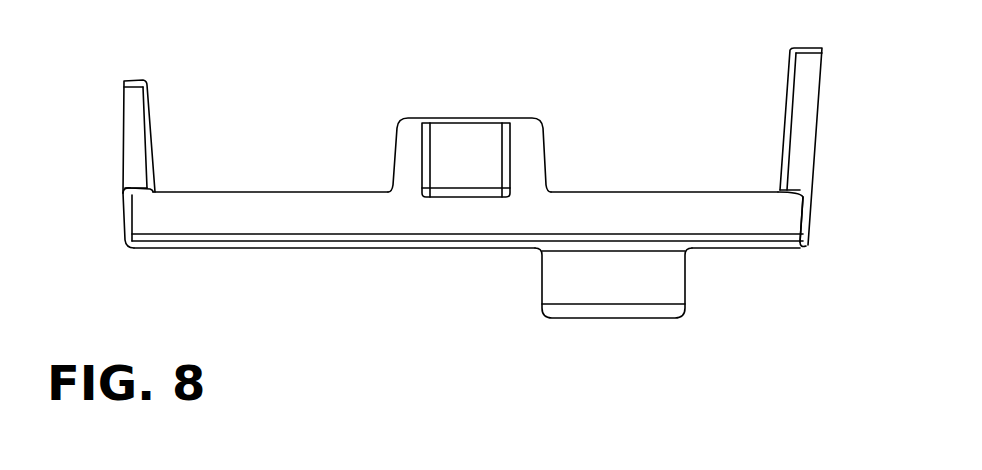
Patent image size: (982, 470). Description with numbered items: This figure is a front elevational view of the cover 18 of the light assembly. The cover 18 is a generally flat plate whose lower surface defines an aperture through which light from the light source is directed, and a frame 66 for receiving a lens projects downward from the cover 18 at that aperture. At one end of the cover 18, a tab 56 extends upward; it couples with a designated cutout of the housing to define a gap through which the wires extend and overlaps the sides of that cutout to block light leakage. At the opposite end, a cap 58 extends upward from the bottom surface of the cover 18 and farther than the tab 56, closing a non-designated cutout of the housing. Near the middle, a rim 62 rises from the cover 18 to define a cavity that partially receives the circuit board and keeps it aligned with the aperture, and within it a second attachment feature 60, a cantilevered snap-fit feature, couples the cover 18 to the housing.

The cover 18 is at (310, 110).
The tab 56 is at (118, 152).
The cap 58 is at (818, 132).
The second attachment feature 60 is at (453, 193).
The rim 62 is at (522, 120).
The frame 66 is at (685, 285).